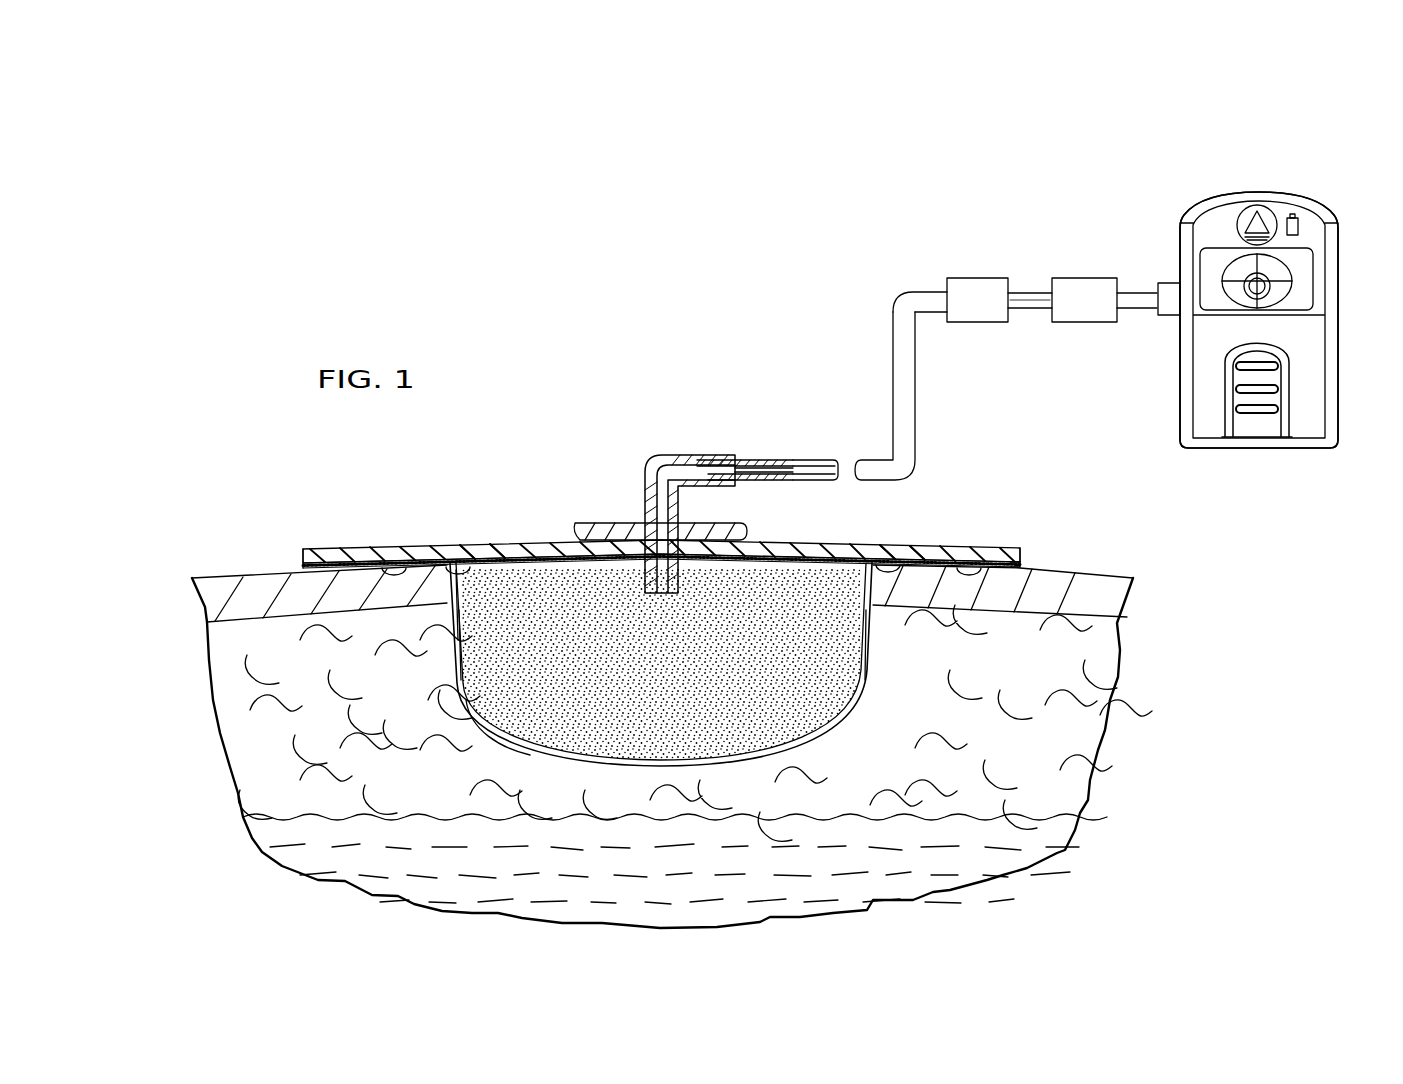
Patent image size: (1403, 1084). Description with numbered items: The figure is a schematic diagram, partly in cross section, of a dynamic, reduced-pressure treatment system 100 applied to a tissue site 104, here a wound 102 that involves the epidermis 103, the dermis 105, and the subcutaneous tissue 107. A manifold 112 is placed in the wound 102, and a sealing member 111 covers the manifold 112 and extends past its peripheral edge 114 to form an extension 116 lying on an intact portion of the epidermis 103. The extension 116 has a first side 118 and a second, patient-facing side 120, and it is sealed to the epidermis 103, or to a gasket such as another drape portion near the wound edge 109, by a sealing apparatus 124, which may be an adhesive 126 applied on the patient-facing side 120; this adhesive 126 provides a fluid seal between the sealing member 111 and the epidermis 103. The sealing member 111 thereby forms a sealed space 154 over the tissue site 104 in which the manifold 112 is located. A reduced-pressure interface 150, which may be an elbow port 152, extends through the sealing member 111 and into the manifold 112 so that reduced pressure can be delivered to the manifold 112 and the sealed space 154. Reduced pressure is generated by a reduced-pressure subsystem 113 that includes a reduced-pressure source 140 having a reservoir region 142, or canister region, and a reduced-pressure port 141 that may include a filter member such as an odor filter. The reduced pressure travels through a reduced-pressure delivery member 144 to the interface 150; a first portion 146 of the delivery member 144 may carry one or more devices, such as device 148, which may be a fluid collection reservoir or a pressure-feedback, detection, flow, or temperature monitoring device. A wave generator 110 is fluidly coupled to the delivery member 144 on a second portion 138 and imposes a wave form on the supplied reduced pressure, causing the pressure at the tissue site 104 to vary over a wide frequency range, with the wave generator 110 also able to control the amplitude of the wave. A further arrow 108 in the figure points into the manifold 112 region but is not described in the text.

The dynamic, reduced-pressure treatment system 100 is at (597, 405).
The wound 102 is at (873, 627).
The epidermis 103 is at (203, 603).
The tissue site 104 is at (558, 755).
The dermis 105 is at (352, 770).
The subcutaneous tissue 107 is at (682, 882).
The tissue interface filler 108 is at (768, 728).
The wound edge 109 is at (477, 562).
The wave generator 110 is at (495, 723).
The sealing member 111 is at (1018, 547).
The manifold 112 is at (685, 675).
The reduced-pressure subsystem 113 is at (1298, 192).
The peripheral edge 114 is at (457, 685).
The extension 116 is at (365, 540).
The first side 118 is at (327, 548).
The second, patient-facing side 120 is at (410, 570).
The sealing apparatus 124 is at (1025, 559).
The adhesive 126 is at (300, 567).
The second portion 138 is at (945, 286).
The reduced-pressure source 140 is at (1338, 272).
The reduced-pressure port 141 is at (1166, 284).
The reservoir region 142 is at (1313, 378).
The reduced-pressure delivery member 144 is at (823, 458).
The first portion 146 is at (1045, 316).
The device 148 is at (1085, 280).
The reduced-pressure interface 150 is at (688, 453).
The elbow port 152 is at (643, 467).
The sealed space 154 is at (453, 618).